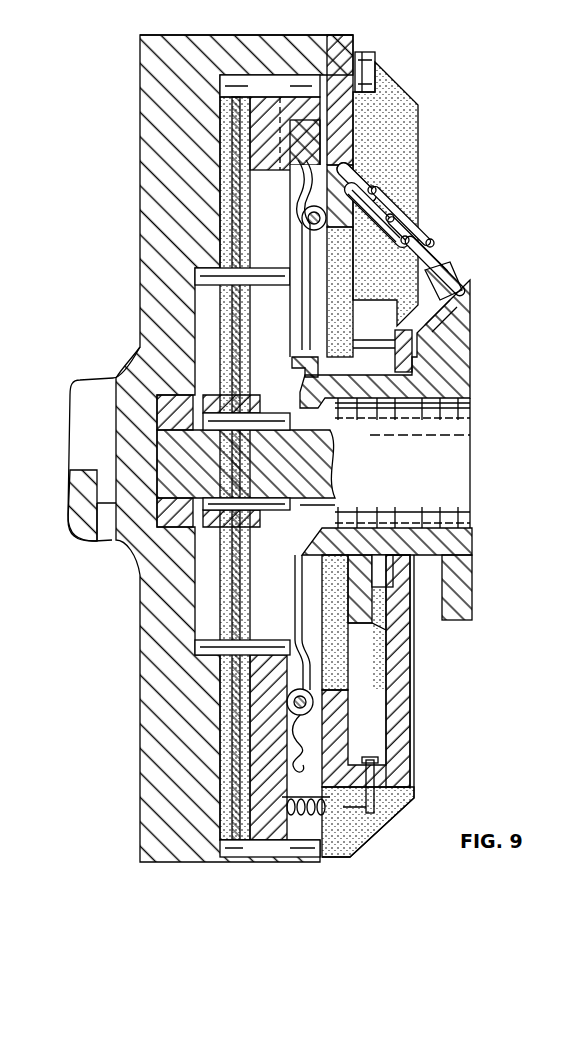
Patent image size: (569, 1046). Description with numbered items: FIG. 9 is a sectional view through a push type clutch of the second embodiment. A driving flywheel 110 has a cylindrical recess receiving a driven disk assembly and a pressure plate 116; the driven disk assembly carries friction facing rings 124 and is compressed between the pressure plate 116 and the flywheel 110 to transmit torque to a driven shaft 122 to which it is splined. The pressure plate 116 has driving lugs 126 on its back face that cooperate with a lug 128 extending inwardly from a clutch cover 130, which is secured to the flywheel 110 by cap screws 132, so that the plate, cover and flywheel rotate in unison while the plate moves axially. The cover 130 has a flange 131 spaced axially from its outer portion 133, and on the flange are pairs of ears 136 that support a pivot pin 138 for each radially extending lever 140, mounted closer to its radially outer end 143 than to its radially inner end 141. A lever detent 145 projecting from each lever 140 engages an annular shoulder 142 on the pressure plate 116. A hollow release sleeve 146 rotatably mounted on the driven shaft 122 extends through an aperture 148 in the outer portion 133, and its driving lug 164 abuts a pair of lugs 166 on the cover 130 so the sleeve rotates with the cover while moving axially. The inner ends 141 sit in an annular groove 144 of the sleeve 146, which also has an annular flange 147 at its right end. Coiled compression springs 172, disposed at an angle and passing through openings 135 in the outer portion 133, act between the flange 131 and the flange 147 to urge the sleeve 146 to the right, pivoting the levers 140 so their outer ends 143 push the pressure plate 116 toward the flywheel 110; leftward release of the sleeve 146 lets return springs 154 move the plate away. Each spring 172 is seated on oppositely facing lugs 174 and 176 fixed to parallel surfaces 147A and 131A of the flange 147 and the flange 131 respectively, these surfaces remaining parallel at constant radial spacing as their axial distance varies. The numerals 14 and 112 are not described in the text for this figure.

The friction disc 14 is at (222, 352).
The flywheel 110 is at (158, 163).
The housing top wall 112 is at (318, 36).
The pressure plate 116 is at (276, 666).
The driven shaft 122 is at (246, 461).
The friction facing rings 124 is at (270, 848).
The driving lugs 126 is at (330, 130).
The lug 128 is at (270, 86).
The clutch cover 130 is at (418, 706).
The flange 131 is at (332, 734).
The parallel surface 131A is at (380, 194).
The cap screws 132 is at (378, 83).
The outer portion 133 is at (398, 757).
The openings 135 is at (398, 198).
The ears 136 is at (318, 262).
The pivot pin 138 is at (318, 268).
The levers 140 is at (304, 333).
The radially inner end 141 is at (300, 362).
The annular shoulder 142 is at (301, 735).
The radially outer end 143 is at (290, 168).
The annular groove 144 is at (298, 560).
The lever detent 145 is at (355, 178).
The release sleeve 146 is at (472, 547).
The annular flange 147 is at (456, 343).
The parallel surface 147A is at (400, 358).
The aperture 148 is at (408, 558).
The return springs 154 is at (335, 815).
The driving lug 164 is at (358, 623).
The lugs 166 is at (380, 650).
The coiled compression springs 172 is at (425, 258).
The lug 174 is at (452, 276).
The lug 176 is at (385, 222).